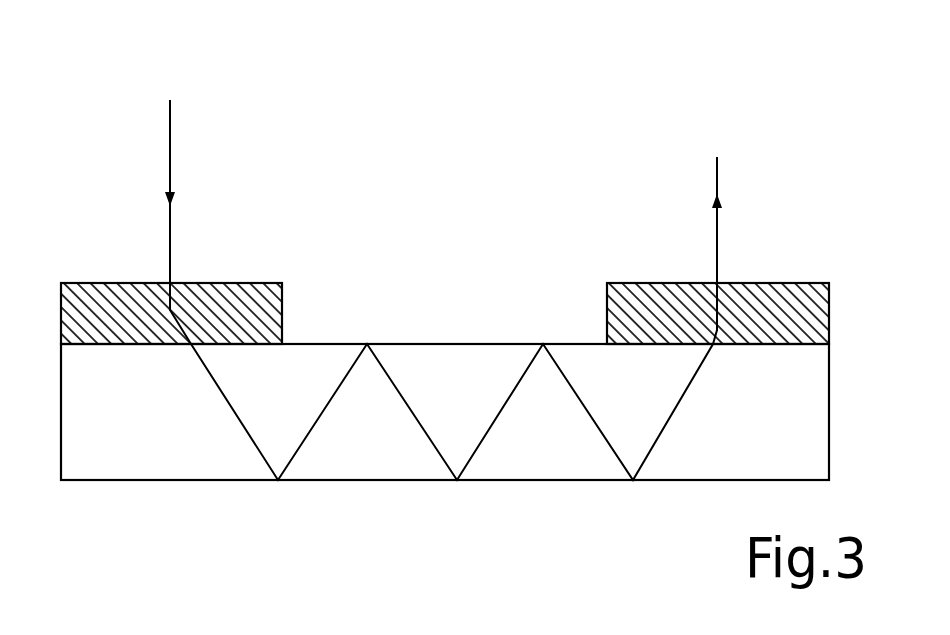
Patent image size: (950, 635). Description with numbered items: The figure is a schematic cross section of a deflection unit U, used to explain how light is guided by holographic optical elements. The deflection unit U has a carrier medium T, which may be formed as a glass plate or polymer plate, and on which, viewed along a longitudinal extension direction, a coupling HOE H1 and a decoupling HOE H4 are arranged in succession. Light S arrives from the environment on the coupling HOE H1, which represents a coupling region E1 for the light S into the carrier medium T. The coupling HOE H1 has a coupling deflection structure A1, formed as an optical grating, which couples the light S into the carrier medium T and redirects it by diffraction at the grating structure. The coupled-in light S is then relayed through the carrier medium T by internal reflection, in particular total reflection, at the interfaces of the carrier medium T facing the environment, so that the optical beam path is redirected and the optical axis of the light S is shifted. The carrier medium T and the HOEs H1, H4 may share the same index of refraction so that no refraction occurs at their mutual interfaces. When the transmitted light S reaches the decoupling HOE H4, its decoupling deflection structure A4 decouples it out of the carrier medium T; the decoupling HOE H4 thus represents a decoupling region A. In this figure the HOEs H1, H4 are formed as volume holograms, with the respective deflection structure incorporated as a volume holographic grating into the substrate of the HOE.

The carrier medium T is at (830, 408).
The coupling HOE H1 is at (257, 270).
The decoupling HOE H4 is at (841, 268).
The coupling region E1 is at (89, 283).
The coupling deflection structure A1 is at (130, 322).
The decoupling deflection structure A4 is at (772, 317).
The light S is at (441, 290).
The decoupling region A is at (770, 283).
The deflection unit U is at (796, 119).